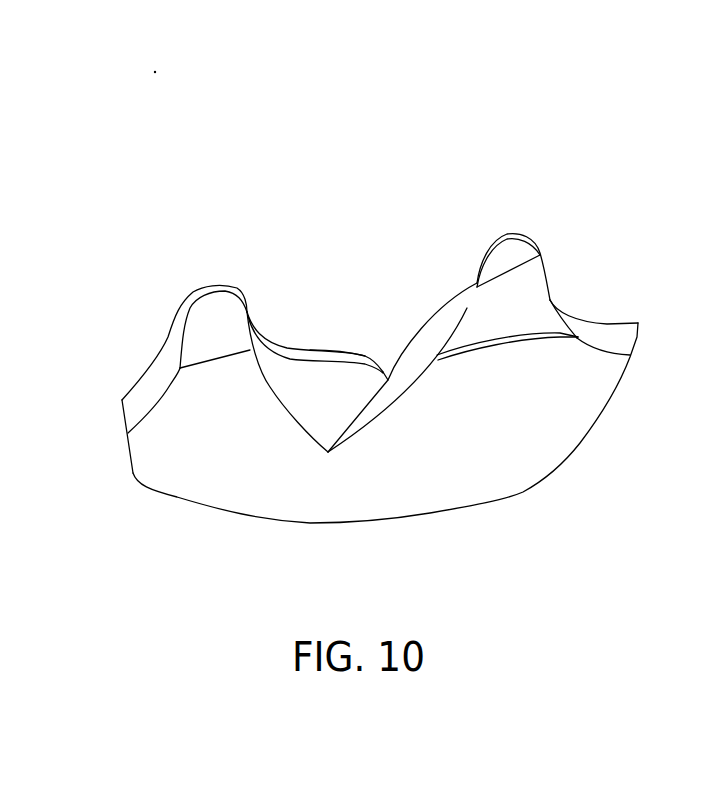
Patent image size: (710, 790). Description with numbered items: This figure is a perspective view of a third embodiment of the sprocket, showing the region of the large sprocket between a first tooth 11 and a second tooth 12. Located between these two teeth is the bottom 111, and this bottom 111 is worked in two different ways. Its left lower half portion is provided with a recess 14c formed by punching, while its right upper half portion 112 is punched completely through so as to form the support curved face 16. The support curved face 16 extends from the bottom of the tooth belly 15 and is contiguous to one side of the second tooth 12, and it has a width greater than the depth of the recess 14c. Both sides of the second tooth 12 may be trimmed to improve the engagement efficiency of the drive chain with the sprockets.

The first tooth 11 is at (213, 327).
The second tooth 12 is at (520, 298).
The recess 14c is at (315, 388).
The bottom 111 is at (332, 348).
The right upper half portion 112 is at (388, 348).
The tooth belly 15 is at (467, 308).
The support curved face 16 is at (425, 345).